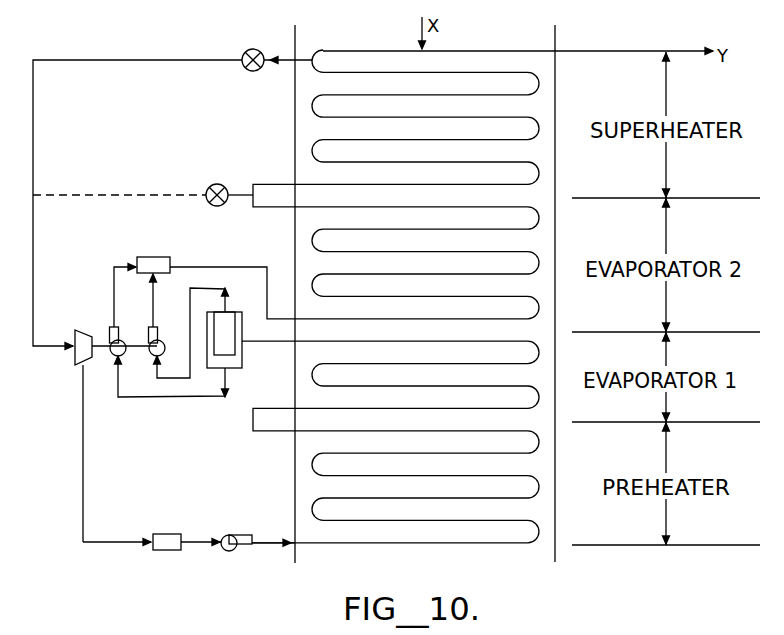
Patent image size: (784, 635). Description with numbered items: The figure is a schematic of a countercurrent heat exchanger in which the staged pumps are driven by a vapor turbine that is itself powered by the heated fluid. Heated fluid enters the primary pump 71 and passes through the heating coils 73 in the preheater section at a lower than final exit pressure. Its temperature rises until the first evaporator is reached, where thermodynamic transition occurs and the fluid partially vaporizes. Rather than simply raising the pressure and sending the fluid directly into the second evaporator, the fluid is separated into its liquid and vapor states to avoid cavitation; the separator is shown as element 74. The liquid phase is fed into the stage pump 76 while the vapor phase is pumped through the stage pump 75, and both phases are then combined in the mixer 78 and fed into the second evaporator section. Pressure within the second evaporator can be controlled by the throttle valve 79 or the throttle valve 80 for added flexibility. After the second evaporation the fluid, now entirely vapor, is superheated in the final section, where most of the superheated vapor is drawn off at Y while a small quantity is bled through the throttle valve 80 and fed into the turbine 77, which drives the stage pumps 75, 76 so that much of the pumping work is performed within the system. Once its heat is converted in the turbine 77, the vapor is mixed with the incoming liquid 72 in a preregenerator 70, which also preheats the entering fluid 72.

The preregenerator 70 is at (165, 552).
The primary pump 71 is at (232, 552).
The incoming liquid 72 is at (167, 531).
The heating coils 73 is at (395, 546).
The steam separator 74 is at (246, 367).
The stage pump 75 is at (148, 330).
The stage pump 76 is at (108, 330).
The turbine 77 is at (70, 356).
The mixer 78 is at (150, 255).
The throttle valve 79 is at (216, 182).
The throttle valve 80 is at (250, 51).